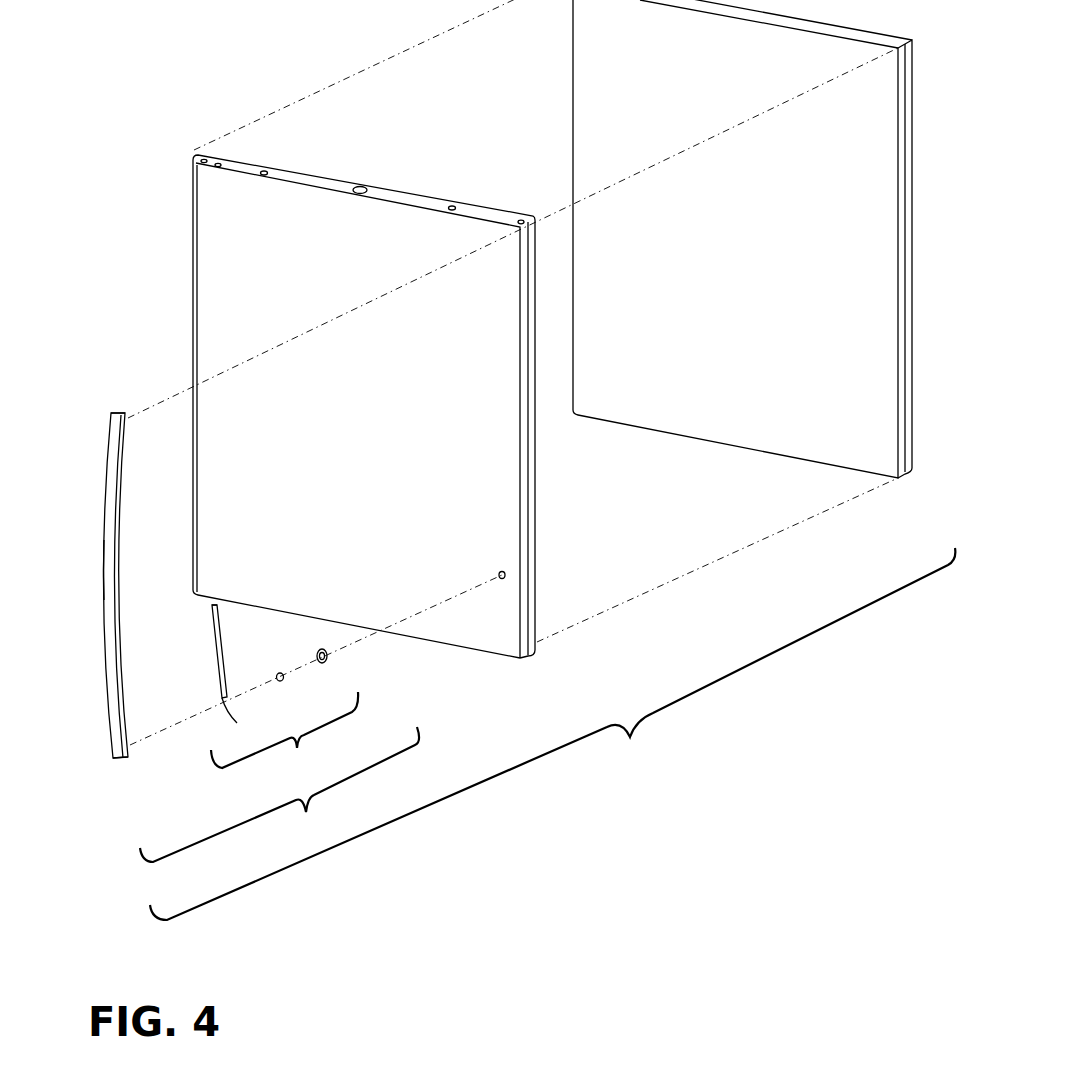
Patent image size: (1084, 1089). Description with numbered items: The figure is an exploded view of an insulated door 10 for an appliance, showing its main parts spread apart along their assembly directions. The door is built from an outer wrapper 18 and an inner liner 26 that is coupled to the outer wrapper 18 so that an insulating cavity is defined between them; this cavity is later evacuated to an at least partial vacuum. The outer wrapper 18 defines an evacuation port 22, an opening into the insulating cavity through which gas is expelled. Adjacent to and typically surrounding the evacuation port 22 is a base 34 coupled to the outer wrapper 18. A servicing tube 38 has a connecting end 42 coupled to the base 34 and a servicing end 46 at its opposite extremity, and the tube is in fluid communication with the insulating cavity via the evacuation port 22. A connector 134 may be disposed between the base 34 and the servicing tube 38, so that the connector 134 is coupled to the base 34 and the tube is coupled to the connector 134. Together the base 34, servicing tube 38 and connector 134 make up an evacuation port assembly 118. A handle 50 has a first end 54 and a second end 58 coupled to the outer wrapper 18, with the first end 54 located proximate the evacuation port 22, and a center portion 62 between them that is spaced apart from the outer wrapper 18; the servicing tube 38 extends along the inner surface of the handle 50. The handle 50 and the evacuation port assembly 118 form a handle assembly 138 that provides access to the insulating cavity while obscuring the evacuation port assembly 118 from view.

The insulated door 10 is at (552, 734).
The outer wrapper 18 is at (222, 283).
The evacuation port 22 is at (501, 582).
The inner liner 26 is at (742, 414).
The base 34 is at (322, 663).
The servicing tube 38 is at (215, 652).
The connecting end 42 is at (235, 725).
The servicing end 46 is at (210, 604).
The handle 50 is at (103, 652).
The first end 54 is at (113, 758).
The second end 58 is at (114, 422).
The center portion 62 is at (105, 562).
The evacuation port assembly 118 is at (284, 738).
The connector 134 is at (283, 681).
The handle assembly 138 is at (279, 794).